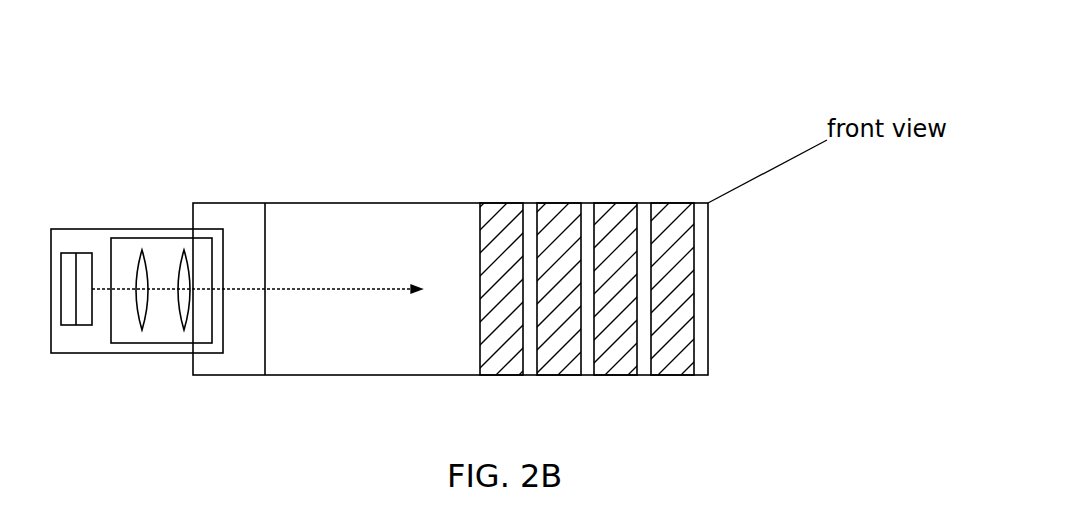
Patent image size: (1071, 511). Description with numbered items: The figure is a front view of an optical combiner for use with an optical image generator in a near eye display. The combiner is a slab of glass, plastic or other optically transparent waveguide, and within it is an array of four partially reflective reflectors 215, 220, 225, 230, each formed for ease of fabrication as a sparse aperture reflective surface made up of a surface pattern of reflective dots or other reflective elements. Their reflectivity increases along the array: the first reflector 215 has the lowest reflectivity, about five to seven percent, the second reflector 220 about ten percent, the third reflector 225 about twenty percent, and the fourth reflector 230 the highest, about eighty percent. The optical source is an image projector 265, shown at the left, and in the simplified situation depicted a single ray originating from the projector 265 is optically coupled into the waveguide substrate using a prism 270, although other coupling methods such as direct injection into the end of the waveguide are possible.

The first reflector 215 is at (497, 203).
The second reflector 220 is at (555, 203).
The third reflector 225 is at (613, 203).
The fourth reflector 230 is at (670, 203).
The image projector 265 is at (92, 362).
The prism 270 is at (212, 219).